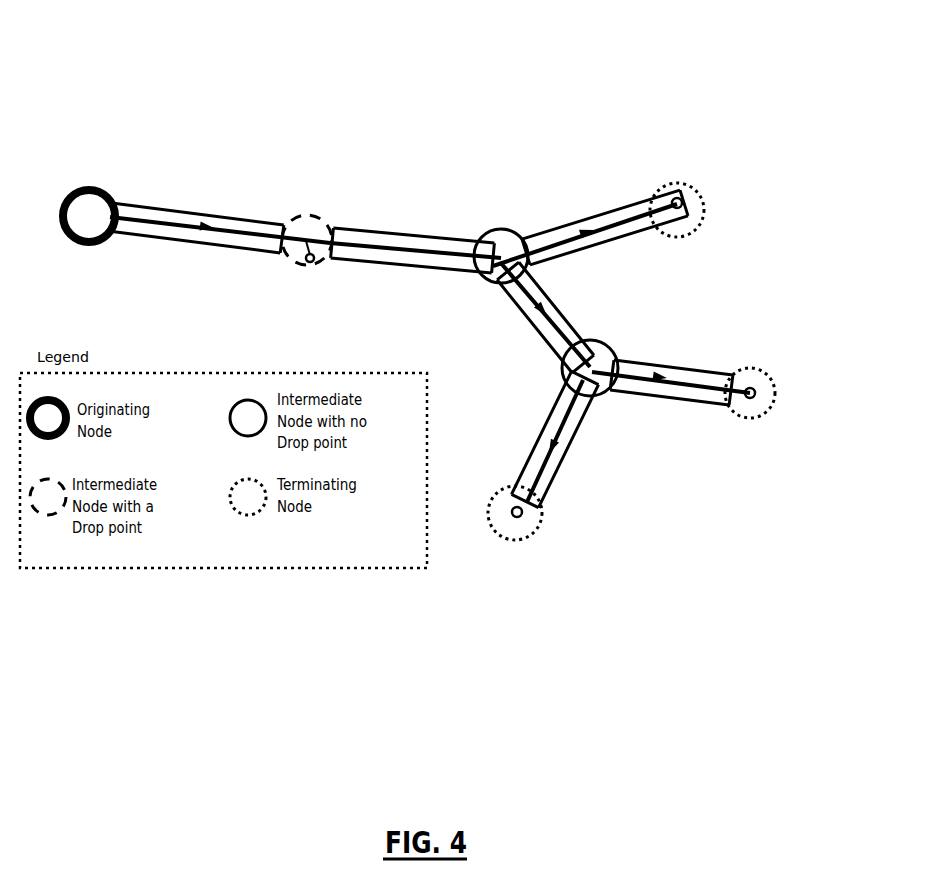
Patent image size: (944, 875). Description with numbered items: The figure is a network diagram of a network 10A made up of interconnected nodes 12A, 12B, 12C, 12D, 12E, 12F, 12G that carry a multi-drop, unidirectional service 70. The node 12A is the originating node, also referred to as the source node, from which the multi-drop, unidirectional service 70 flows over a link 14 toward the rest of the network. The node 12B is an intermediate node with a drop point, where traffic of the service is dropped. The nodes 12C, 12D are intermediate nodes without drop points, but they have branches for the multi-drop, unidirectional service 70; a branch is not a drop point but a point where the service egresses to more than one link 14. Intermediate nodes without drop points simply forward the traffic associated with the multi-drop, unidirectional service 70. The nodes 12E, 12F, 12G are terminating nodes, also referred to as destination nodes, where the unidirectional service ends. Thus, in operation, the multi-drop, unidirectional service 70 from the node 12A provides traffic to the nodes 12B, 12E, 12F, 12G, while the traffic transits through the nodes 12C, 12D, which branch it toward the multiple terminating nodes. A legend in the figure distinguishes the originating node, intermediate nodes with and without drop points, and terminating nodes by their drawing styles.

The network 10A is at (531, 44).
The originating node 12A is at (96, 185).
The intermediate node with a drop point 12B is at (312, 210).
The intermediate node without drop point 12C is at (492, 281).
The intermediate node without drop point 12D is at (598, 341).
The terminating node 12E is at (513, 541).
The terminating node 12F is at (747, 419).
The terminating node 12G is at (700, 190).
The link 14 is at (190, 206).
The multi-drop, unidirectional service 70 is at (397, 245).